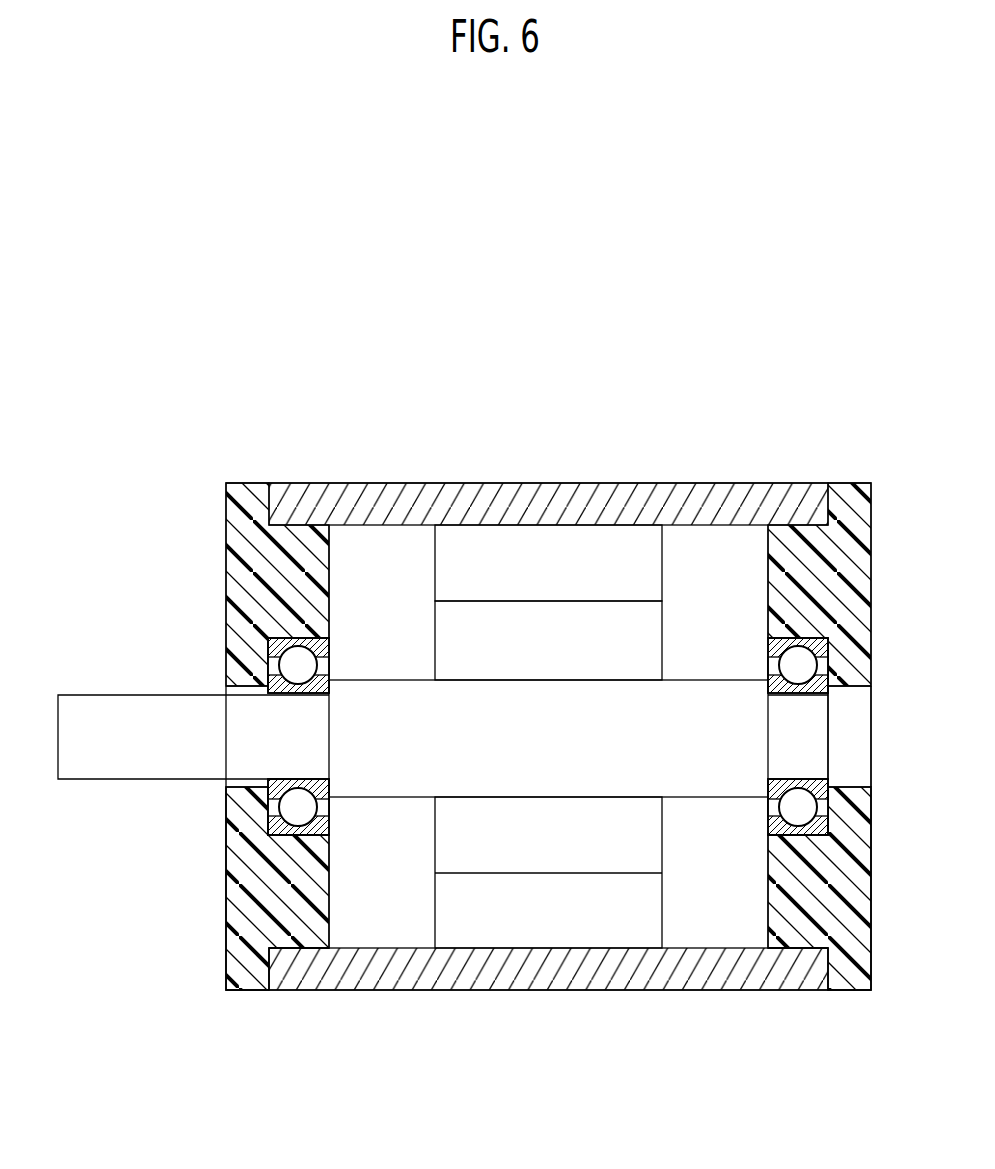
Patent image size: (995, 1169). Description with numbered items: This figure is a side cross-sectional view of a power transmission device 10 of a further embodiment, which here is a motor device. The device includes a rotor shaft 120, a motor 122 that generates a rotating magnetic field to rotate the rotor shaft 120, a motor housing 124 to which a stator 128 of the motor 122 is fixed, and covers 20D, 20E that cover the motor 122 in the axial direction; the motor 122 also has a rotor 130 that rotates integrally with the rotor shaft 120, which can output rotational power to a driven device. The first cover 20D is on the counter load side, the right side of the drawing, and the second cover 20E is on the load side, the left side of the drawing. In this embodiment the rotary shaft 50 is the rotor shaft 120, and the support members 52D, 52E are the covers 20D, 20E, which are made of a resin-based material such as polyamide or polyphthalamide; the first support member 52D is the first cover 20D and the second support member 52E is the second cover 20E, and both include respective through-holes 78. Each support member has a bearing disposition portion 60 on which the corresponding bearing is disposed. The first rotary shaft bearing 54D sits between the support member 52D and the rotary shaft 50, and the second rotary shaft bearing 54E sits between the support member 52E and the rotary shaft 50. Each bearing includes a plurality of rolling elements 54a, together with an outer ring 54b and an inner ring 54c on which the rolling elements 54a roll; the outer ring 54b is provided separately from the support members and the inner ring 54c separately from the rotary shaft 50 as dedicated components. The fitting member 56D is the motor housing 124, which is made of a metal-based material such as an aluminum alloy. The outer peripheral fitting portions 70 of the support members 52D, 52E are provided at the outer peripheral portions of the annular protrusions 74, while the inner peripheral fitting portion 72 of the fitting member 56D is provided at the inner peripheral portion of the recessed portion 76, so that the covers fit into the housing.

The power transmission device 10 is at (218, 432).
The second cover 20E is at (253, 785).
The second support member 52E is at (245, 992).
The first cover 20D is at (829, 785).
The first support member 52D is at (848, 992).
The fitting member 56D is at (548, 450).
The motor housing 124 is at (517, 483).
The motor 122 is at (472, 670).
The stator 128 is at (445, 568).
The rotor 130 is at (445, 642).
The rotary shaft 50 is at (548, 790).
The rotor shaft 120 is at (378, 816).
The bearing disposition portion 60 is at (278, 801).
The second rotary shaft bearing 54E is at (271, 729).
The first rotary shaft bearing 54D is at (836, 826).
The rolling element 54a is at (306, 668).
The outer ring 54b is at (330, 650).
The inner ring 54c is at (329, 690).
The outer peripheral fitting portion 70 is at (298, 950).
The inner peripheral fitting portion 72 is at (310, 948).
The annular protrusion 74 is at (333, 548).
The recessed portion 76 is at (280, 948).
The through-hole 78 is at (248, 688).